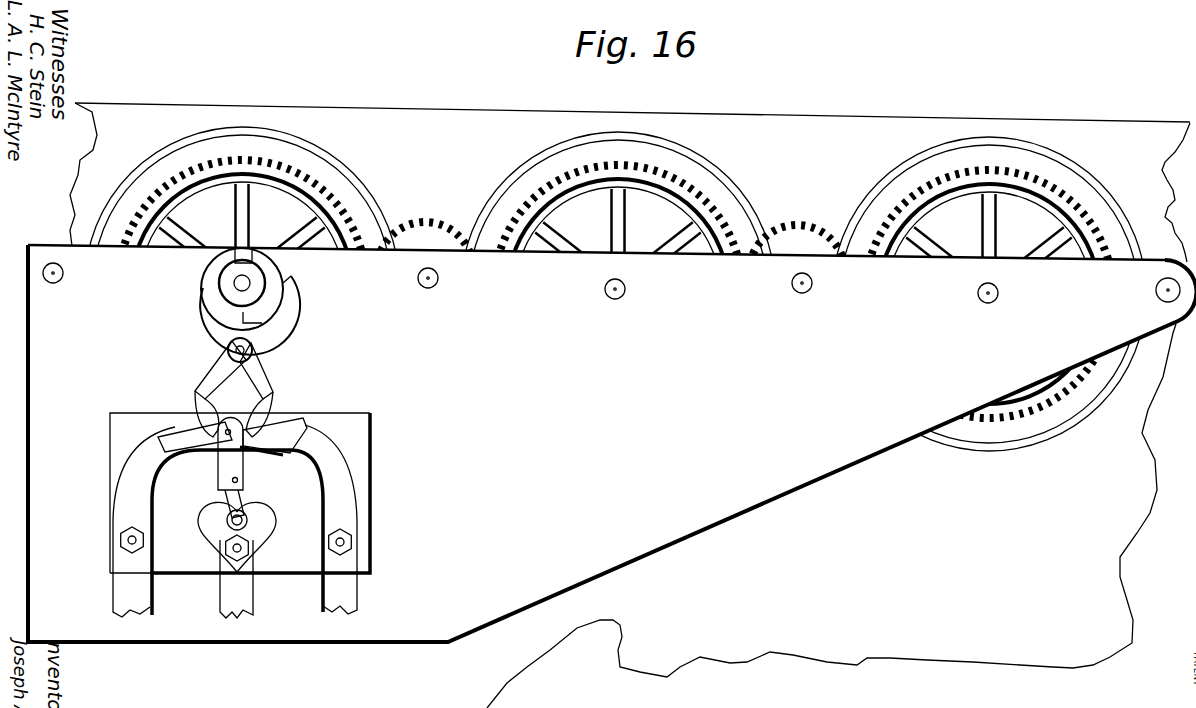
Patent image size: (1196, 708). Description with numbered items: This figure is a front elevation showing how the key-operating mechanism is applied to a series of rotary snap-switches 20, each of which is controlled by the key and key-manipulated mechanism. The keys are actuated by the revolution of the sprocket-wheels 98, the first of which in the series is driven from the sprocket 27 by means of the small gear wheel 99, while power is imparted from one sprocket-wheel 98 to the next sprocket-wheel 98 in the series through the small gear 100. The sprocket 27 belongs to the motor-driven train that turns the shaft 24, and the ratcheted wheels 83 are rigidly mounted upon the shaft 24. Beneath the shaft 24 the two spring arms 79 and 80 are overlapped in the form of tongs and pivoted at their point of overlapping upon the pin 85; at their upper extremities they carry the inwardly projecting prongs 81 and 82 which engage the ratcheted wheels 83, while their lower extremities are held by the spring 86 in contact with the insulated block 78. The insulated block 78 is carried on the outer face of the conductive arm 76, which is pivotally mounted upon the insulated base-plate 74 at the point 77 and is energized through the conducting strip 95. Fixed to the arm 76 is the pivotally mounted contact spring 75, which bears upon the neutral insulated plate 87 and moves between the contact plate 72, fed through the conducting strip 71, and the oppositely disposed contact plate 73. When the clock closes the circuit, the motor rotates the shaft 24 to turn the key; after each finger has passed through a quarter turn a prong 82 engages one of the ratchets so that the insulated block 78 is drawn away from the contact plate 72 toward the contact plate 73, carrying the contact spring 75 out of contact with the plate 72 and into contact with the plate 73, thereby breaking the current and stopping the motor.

The rotary snap-switch 20 is at (325, 177).
The gear 27 is at (332, 199).
The sprocket-wheel 98 is at (736, 210).
The small gear wheel 99 is at (432, 232).
The small gear 100 is at (806, 237).
The shaft 24 is at (242, 283).
The prong 82 is at (212, 288).
The ratcheted wheel 83 is at (271, 301).
The prong 81 is at (293, 280).
The pin 85 is at (252, 351).
The spring 86 is at (265, 376).
The spring arm 80 is at (258, 403).
The spring arm 79 is at (212, 366).
The neutral insulated plate 87 is at (175, 432).
The contact spring 75 is at (280, 429).
The insulated base-plate 74 is at (358, 440).
The insulated block 78 is at (230, 461).
The contact plate 72 is at (130, 508).
The conducting strip 71 is at (122, 598).
The contact plate 73 is at (345, 562).
The conductive arm 76 is at (205, 556).
The pivot point 77 is at (276, 556).
The conducting strip 95 is at (237, 605).